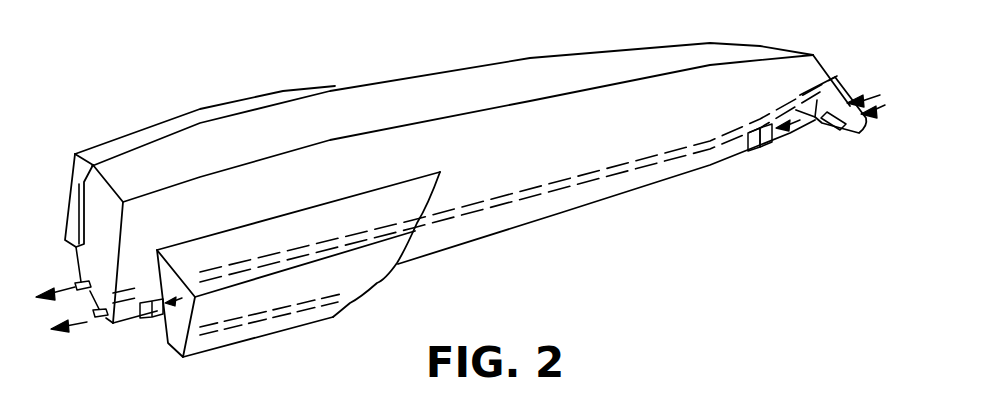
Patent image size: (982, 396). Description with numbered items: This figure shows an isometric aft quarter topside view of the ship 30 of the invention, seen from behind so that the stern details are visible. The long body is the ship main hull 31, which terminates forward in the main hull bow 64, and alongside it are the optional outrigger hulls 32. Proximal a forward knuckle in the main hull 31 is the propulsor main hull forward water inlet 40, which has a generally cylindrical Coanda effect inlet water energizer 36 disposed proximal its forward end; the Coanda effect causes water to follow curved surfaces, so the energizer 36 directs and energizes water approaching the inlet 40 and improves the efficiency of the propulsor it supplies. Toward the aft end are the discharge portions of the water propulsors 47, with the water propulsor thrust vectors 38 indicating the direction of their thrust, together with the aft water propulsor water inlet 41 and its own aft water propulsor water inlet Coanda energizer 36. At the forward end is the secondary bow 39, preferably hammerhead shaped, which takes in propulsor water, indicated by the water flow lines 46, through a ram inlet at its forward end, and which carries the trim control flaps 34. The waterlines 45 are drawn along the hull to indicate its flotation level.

The ship 30 is at (533, 138).
The ship main hull 31 is at (608, 144).
The outrigger hulls 32 is at (283, 90).
The trim control flaps 34 is at (832, 133).
The Coanda effect inlet water energizer 36 is at (157, 318).
The water propulsor thrust vectors 38 is at (90, 322).
The secondary bow 39 is at (846, 99).
The propulsor main hull forward water inlet 40 is at (755, 149).
The aft water propulsor water inlet 41 is at (142, 307).
The waterlines 45 is at (483, 215).
The water flow lines 46 is at (888, 105).
The water propulsors 47 is at (97, 312).
The main hull bow 64 is at (824, 69).